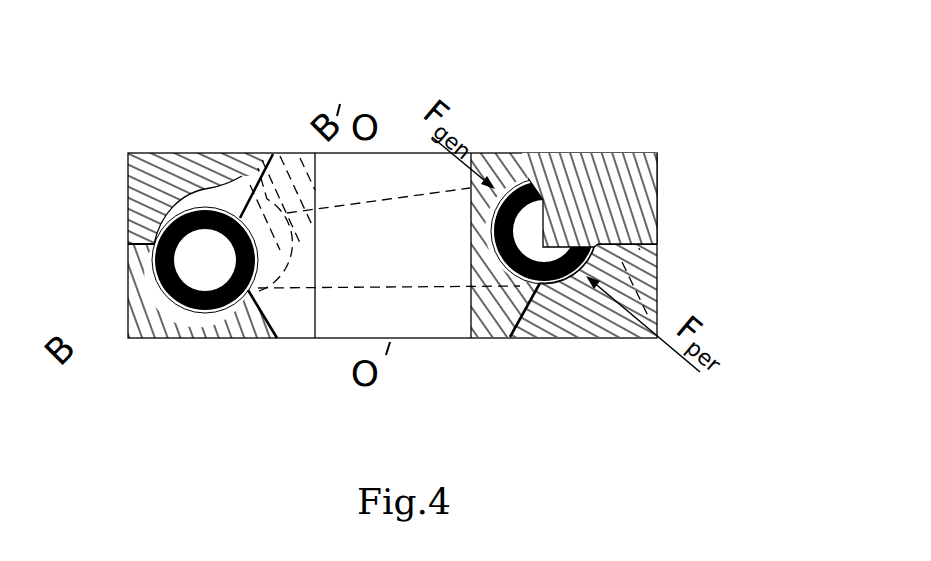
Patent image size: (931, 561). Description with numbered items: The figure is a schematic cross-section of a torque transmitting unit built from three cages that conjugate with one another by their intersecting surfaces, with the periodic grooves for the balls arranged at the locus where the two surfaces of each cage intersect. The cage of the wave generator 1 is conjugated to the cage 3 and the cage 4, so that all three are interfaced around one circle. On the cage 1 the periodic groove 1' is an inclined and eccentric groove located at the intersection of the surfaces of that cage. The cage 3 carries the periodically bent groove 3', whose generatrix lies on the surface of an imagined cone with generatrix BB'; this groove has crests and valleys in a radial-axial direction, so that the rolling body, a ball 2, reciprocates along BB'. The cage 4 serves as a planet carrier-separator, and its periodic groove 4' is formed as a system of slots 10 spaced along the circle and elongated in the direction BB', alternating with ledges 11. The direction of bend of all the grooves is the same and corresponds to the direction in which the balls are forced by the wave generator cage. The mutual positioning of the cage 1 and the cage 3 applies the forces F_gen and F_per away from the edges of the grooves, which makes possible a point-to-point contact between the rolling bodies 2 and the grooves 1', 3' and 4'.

The slots 10 is at (452, 193).
The rolling bodies (balls) 2 is at (153, 240).
The periodic groove of cage 4 4' is at (213, 145).
The cage of the wave generator 1 is at (261, 178).
The periodic groove of cage 1 1' is at (512, 165).
The ledges 11 is at (594, 153).
The cage (planet carrier-separator) 4 is at (705, 193).
The cage 3 is at (658, 290).
The periodic groove of cage 3 3' is at (546, 334).